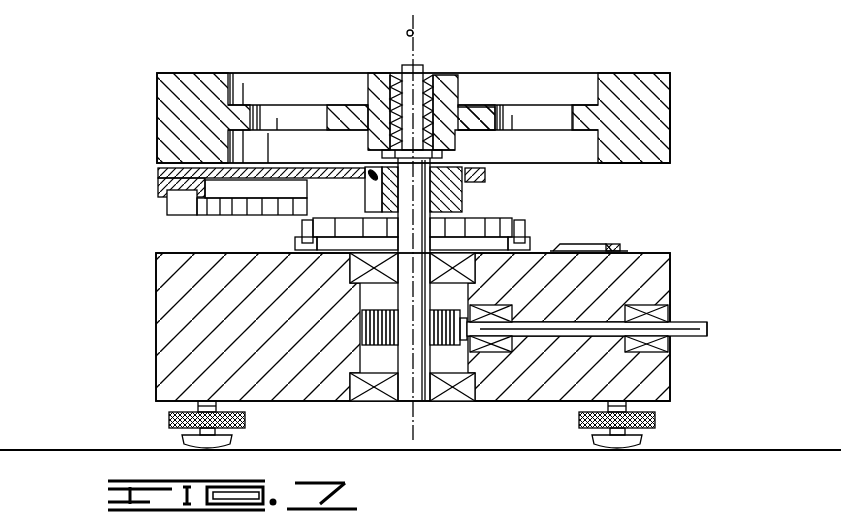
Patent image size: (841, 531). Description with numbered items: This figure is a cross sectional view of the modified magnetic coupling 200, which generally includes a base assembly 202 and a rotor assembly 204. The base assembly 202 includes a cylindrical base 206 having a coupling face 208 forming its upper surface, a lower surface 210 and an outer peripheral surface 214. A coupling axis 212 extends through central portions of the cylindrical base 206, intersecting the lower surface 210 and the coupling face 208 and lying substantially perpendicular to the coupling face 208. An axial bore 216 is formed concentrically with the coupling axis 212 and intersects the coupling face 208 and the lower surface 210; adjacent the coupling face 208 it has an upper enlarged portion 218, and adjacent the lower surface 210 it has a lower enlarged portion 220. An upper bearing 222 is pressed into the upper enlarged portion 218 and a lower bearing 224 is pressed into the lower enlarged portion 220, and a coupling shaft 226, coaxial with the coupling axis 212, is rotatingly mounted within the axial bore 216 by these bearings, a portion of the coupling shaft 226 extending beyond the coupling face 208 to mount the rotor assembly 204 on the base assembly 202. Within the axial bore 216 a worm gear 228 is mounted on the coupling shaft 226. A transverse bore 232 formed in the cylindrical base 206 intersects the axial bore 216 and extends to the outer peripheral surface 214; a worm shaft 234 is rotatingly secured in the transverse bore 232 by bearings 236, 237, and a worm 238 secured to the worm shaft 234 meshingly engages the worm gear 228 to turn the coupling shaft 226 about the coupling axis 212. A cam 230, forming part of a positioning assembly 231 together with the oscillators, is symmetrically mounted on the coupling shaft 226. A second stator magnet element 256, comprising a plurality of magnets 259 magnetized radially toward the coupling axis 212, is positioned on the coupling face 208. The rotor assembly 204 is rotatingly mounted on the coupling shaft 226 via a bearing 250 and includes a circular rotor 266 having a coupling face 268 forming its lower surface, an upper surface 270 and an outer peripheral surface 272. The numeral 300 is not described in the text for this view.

The modified magnetic coupling 200 is at (549, 55).
The base assembly 202 is at (672, 270).
The rotor assembly 204 is at (648, 82).
The cylindrical base 206 is at (663, 287).
The coupling face 208 is at (652, 253).
The lower surface 210 is at (512, 401).
The coupling axis 212 is at (415, 31).
The outer peripheral surface 214 is at (672, 387).
The axial bore 216 is at (360, 356).
The upper enlarged portion 218 is at (352, 270).
The lower enlarged portion 220 is at (362, 392).
The upper bearing 222 is at (477, 270).
The lower bearing 224 is at (470, 383).
The coupling shaft 226 is at (404, 400).
The worm gear 228 is at (443, 345).
The cam 230 is at (447, 200).
The positioning assembly 231 is at (368, 172).
The transverse bore 232 is at (578, 318).
The worm shaft 234 is at (690, 338).
The bearing 236 is at (500, 345).
The bearing 237 is at (665, 313).
The worm 238 is at (360, 322).
The bearing 250 is at (427, 77).
The second stator magnet element 256 is at (530, 246).
The magnets 259 is at (345, 232).
The circular rotor 266 is at (198, 90).
The coupling face 268 is at (656, 165).
The upper surface 270 is at (626, 77).
The outer peripheral surface 272 is at (672, 132).
The second assembly 300 is at (550, 525).